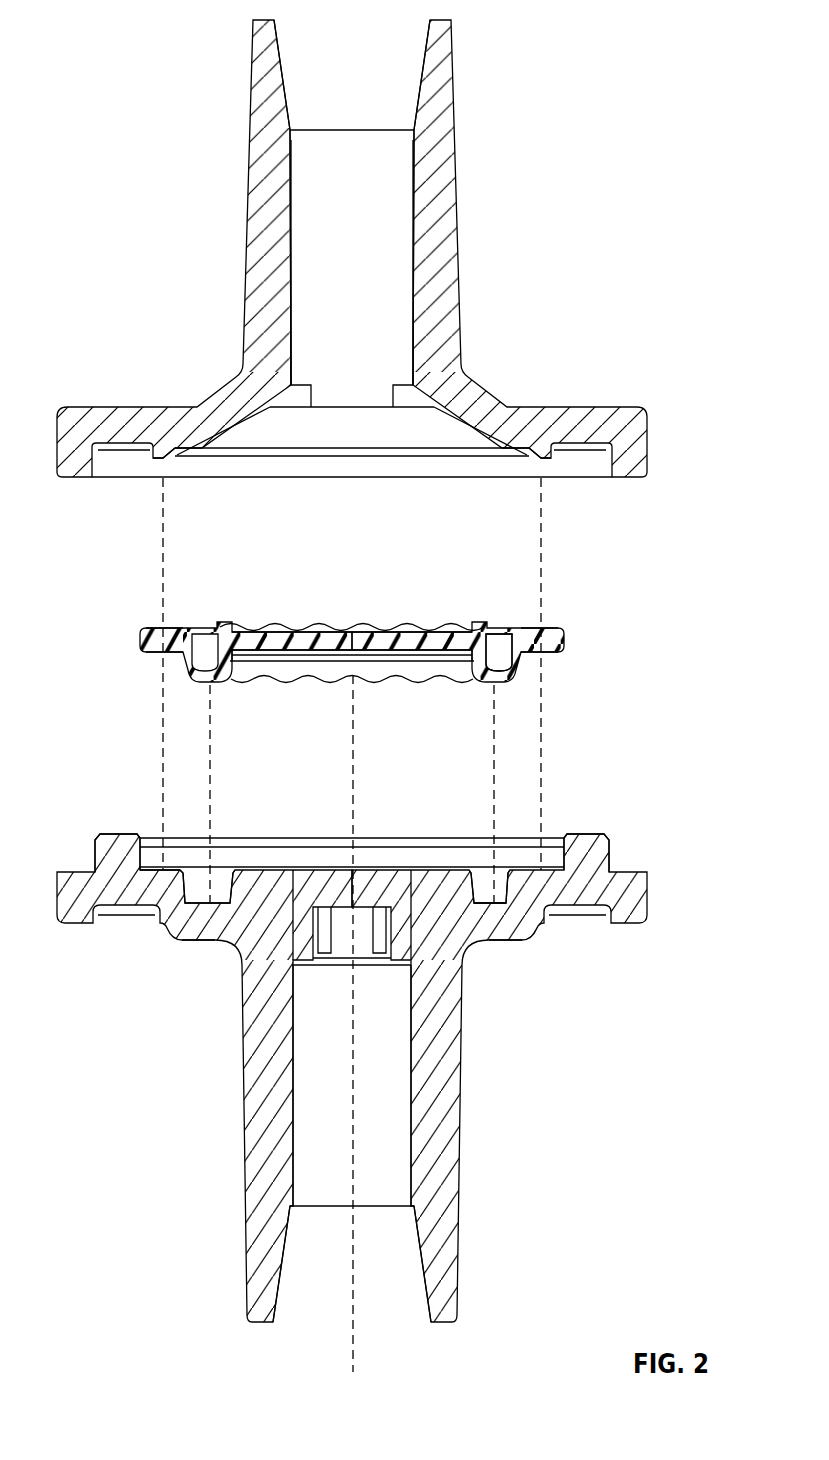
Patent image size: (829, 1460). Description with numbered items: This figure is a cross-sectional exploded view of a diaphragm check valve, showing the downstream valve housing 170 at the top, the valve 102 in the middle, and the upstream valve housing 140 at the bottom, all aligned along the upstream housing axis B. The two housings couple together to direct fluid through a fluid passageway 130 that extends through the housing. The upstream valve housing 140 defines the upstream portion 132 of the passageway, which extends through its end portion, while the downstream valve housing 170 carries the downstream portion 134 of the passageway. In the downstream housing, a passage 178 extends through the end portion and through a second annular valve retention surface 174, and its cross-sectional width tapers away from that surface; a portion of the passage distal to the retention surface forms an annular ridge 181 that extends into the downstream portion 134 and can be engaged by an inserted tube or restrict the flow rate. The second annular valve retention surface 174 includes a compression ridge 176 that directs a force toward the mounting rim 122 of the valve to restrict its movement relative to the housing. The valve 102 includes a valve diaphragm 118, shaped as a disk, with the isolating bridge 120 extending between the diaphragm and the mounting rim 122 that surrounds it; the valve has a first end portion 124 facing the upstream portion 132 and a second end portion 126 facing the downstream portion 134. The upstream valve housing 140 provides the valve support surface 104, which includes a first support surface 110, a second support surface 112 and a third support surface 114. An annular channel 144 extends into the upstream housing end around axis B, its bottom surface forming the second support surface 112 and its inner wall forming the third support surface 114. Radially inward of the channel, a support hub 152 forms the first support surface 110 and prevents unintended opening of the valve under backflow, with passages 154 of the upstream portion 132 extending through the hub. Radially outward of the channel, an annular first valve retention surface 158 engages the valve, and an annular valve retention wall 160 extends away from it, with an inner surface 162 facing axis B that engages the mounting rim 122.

The downstream valve housing 170 is at (668, 36).
The fluid passageway 130 is at (393, 190).
The downstream portion of the fluid passageway 134 is at (385, 265).
The annular ridge 181 is at (407, 398).
The passage 178 is at (460, 438).
The compression ridge 176 is at (157, 457).
The second annular valve retention surface 174 is at (205, 463).
The valve 102 is at (137, 596).
The second end portion 126 is at (278, 617).
The valve diaphragm 118 is at (402, 639).
The mounting rim 122 is at (550, 636).
The first end portion 124 is at (277, 689).
The isolating bridge 120 is at (488, 673).
The first valve retention surface 158 is at (150, 866).
The annular channel 144 is at (198, 866).
The valve support surface 104 is at (275, 829).
The first support surface 110 is at (445, 866).
The third support surface 114 is at (477, 882).
The second support surface 112 is at (505, 897).
The valve retention wall 160 is at (105, 860).
The inner surface 162 is at (577, 860).
The support hub 152 is at (215, 940).
The passages 154 is at (296, 946).
The upstream portion of the fluid passageway 132 is at (393, 1085).
The upstream valve housing 140 is at (560, 1273).
The upstream housing axis B is at (353, 1372).